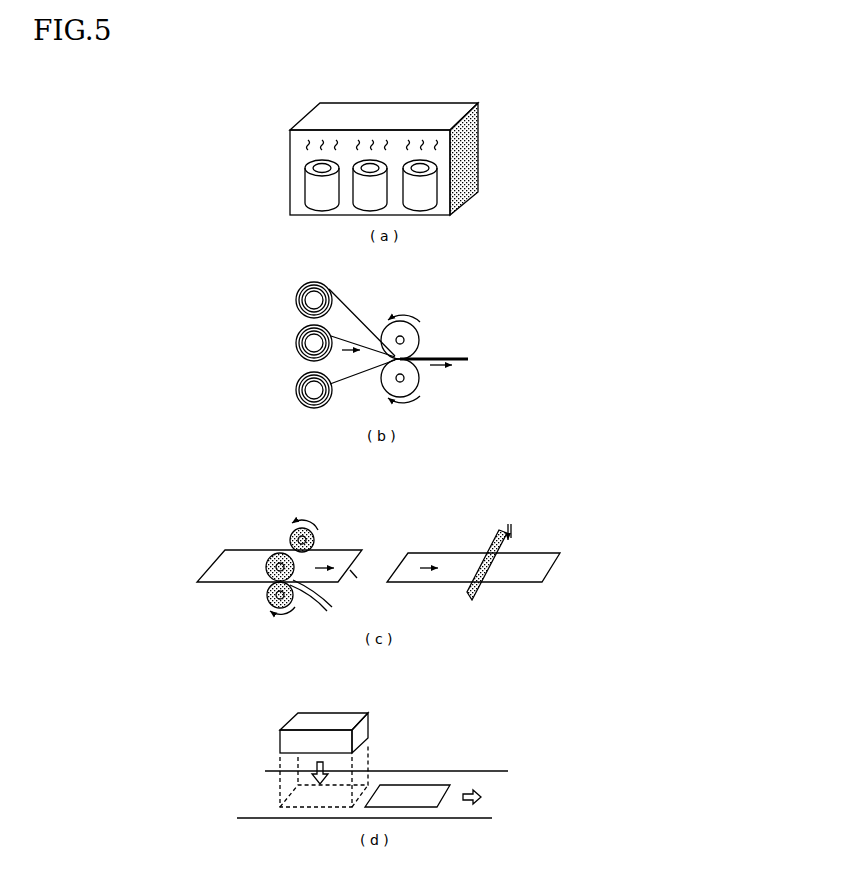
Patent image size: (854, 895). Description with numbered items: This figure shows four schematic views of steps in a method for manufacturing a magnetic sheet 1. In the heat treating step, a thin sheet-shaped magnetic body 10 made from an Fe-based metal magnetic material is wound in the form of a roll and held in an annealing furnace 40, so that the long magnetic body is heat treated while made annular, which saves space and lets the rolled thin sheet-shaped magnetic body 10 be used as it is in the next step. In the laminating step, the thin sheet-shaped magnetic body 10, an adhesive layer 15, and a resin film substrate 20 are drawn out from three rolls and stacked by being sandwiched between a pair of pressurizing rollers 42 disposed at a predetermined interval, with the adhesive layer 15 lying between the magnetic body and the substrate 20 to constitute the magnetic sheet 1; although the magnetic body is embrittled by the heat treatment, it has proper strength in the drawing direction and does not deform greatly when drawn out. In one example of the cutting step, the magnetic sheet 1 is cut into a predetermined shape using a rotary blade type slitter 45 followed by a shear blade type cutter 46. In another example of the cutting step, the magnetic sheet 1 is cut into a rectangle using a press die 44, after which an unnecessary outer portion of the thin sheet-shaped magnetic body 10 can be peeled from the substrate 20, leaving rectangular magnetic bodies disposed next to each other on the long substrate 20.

The magnetic sheet 1 is at (455, 357).
The thin sheet-shaped magnetic body 10 is at (312, 193).
The adhesive layer 15 is at (294, 348).
The substrate 20 is at (294, 385).
The annealing furnace 40 is at (431, 113).
The pressurizing rollers 42 is at (420, 337).
The press die 44 is at (286, 745).
The rotary blade type slitter 45 is at (318, 540).
The shear blade type cutter 46 is at (496, 536).